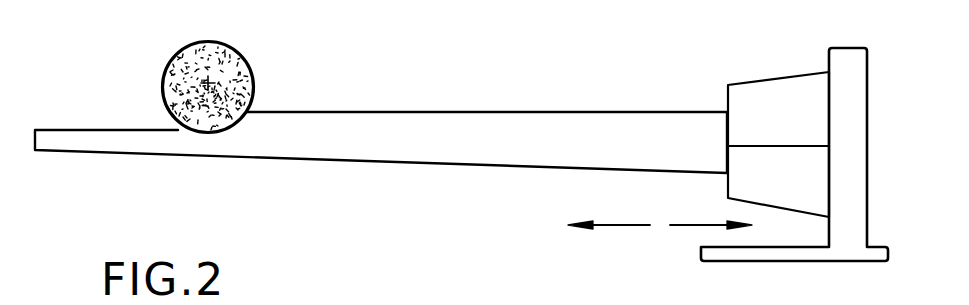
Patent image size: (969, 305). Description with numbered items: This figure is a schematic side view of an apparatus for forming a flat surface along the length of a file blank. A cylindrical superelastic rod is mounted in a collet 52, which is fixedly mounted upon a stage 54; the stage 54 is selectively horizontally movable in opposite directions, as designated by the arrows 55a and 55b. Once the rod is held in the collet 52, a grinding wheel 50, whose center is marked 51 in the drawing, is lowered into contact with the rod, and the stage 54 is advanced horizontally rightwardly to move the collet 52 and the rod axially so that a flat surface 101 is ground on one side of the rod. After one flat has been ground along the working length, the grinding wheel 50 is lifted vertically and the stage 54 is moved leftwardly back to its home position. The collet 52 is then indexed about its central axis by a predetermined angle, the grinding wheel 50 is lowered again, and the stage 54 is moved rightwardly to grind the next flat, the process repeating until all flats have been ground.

The flat surface 101 is at (95, 130).
The grinding wheel 50 is at (238, 67).
The ball center 51 is at (204, 82).
The collet 52 is at (749, 95).
The stage 54 is at (782, 252).
The arrow 55a is at (628, 227).
The arrow 55b is at (693, 228).